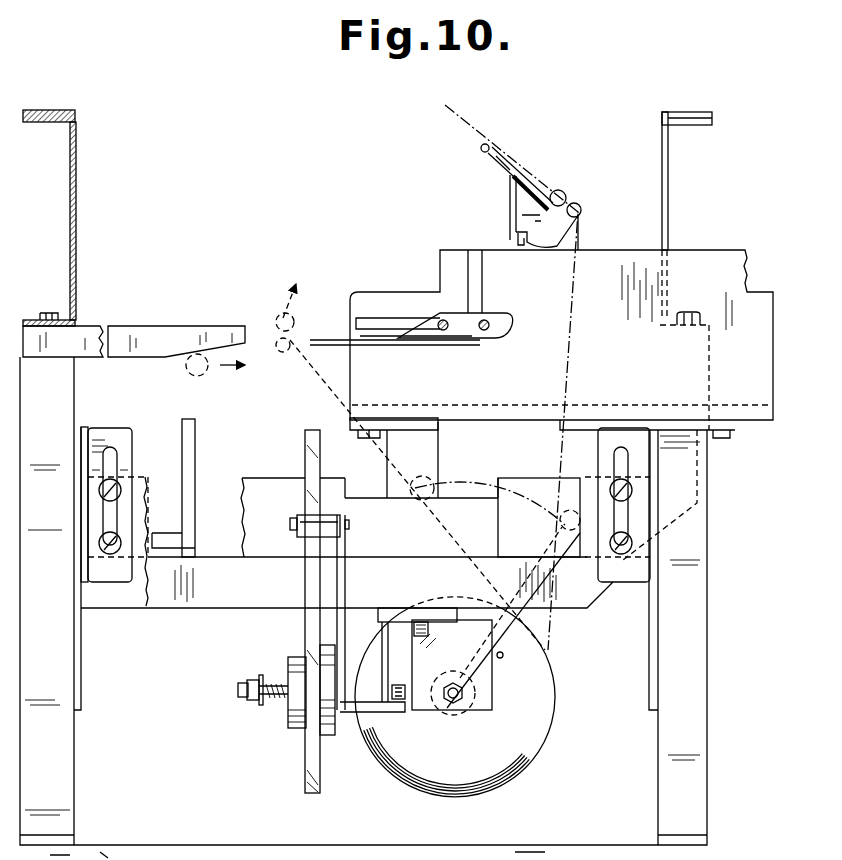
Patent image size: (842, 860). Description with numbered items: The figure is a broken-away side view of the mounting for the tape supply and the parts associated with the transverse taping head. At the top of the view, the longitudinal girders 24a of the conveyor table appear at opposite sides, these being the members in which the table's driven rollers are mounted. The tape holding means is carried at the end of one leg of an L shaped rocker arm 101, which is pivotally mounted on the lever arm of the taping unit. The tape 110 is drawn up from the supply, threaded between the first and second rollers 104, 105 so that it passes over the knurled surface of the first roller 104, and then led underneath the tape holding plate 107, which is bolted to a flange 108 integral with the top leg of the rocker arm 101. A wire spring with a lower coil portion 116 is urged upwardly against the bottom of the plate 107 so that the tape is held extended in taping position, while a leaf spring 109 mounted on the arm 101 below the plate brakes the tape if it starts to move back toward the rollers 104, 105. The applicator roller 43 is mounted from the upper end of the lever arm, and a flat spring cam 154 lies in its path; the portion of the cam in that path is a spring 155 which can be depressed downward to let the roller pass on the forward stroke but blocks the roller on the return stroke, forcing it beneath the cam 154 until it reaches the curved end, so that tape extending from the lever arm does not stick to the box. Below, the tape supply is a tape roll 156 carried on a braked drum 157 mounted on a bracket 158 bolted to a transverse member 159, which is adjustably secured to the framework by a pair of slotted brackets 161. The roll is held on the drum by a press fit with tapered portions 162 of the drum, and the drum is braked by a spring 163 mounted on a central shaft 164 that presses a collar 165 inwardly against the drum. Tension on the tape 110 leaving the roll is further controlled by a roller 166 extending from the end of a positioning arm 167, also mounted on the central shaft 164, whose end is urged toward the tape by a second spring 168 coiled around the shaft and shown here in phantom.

The longitudinal girder 24a is at (77, 142).
The tape 110 is at (472, 131).
The lower coil portion 116 is at (481, 151).
The tape holding plate 107 is at (503, 176).
The leaf spring 109 is at (496, 185).
The flange 108 is at (511, 203).
The L shaped rocker arm 101 is at (512, 231).
The second roller 105 is at (556, 192).
The first roller 104 is at (575, 216).
The spring 155 is at (317, 342).
The flat spring cam 154 is at (440, 345).
The applicator roller 43 is at (207, 362).
The slotted bracket 161 is at (118, 573).
The transverse member 159 is at (160, 623).
The roller 166 is at (305, 523).
The positioning arm 167 is at (346, 544).
The bracket 158 is at (385, 618).
The central shaft 164 is at (268, 678).
The spring 163 is at (268, 704).
The collar 165 is at (288, 680).
The braked drum 157 is at (297, 708).
The tapered portion 162 is at (300, 652).
The tape roll 156 is at (305, 794).
The second spring 168 is at (502, 658).